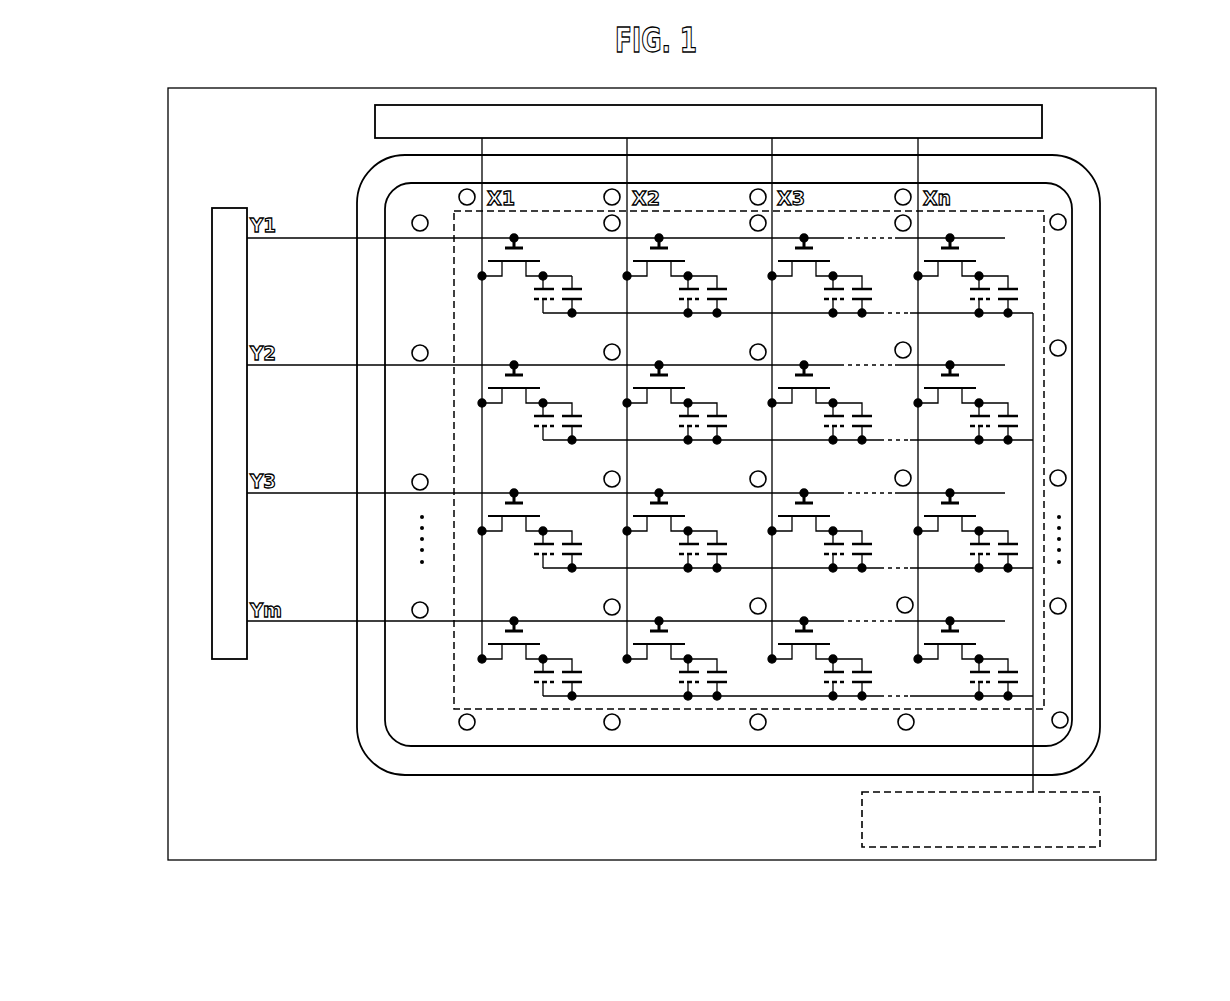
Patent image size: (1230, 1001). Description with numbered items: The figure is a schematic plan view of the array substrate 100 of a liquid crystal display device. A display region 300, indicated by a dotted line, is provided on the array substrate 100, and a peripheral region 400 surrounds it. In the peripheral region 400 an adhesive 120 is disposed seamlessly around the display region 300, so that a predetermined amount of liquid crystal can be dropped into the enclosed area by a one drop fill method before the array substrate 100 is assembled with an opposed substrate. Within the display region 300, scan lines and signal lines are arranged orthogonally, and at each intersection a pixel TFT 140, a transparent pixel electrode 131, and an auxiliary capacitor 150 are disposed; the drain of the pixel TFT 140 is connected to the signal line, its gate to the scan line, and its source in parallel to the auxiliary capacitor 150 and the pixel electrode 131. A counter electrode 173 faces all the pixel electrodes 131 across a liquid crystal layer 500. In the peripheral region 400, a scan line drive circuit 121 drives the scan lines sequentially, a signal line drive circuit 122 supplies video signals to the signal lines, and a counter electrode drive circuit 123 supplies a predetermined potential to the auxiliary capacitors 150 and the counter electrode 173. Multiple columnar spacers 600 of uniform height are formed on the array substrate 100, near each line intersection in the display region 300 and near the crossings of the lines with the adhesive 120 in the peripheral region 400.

The array substrate 100 is at (953, 50).
The adhesive 120 is at (1084, 176).
The scan line drive circuit 121 is at (232, 660).
The signal line drive circuit 122 is at (375, 122).
The counter electrode drive circuit 123 is at (862, 815).
The pixel electrode 131 is at (533, 288).
The pixel TFT 140 is at (505, 252).
The auxiliary capacitor 150 is at (581, 288).
The counter electrode 173 is at (538, 296).
The display region 300 is at (1021, 273).
The peripheral region 400 is at (1119, 412).
The liquid crystal layer 500 is at (533, 297).
The spacer 600 is at (421, 361).